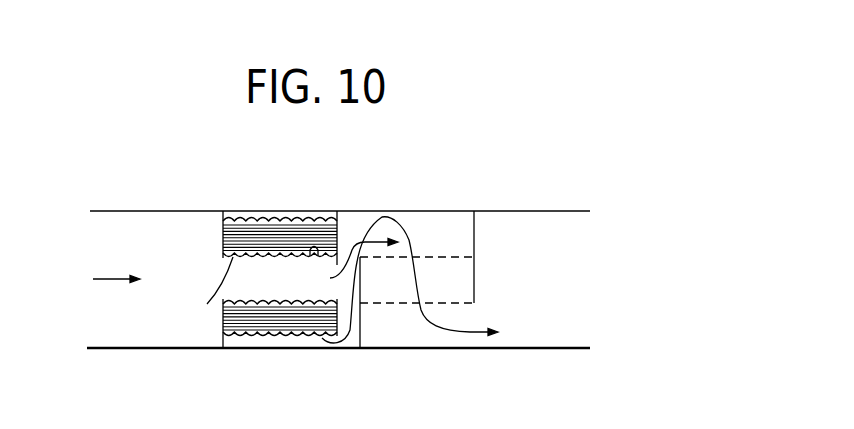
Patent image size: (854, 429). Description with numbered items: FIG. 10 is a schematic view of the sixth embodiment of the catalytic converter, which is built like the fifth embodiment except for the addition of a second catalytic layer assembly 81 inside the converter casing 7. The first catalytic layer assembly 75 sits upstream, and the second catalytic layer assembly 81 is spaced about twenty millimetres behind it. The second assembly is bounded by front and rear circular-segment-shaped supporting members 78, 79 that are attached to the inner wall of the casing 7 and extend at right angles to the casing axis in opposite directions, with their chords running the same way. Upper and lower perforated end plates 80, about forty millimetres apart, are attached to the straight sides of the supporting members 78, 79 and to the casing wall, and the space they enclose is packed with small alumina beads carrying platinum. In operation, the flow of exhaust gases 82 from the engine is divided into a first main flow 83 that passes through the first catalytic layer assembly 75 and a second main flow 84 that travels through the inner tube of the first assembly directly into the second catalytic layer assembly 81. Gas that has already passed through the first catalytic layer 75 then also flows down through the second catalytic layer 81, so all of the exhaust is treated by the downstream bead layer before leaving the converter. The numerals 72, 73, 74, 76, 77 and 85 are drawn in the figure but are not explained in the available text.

The converter casing 7 is at (160, 210).
The upper filter element 72 is at (228, 211).
The lower filter element 73 is at (238, 302).
The edge seal 74 is at (315, 257).
The first catalytic layer assembly 75 is at (277, 238).
The screen 76 is at (328, 218).
The passage 77 is at (351, 247).
The front supporting member 78 is at (350, 342).
The rear supporting member 79 is at (474, 230).
The perforated end plate 80 is at (453, 257).
The second catalytic layer assembly 81 is at (407, 270).
The flow of exhaust gases 82 is at (99, 281).
The first main flow 83 is at (249, 277).
The second main flow 84 is at (330, 278).
The outlet flow 85 is at (510, 330).